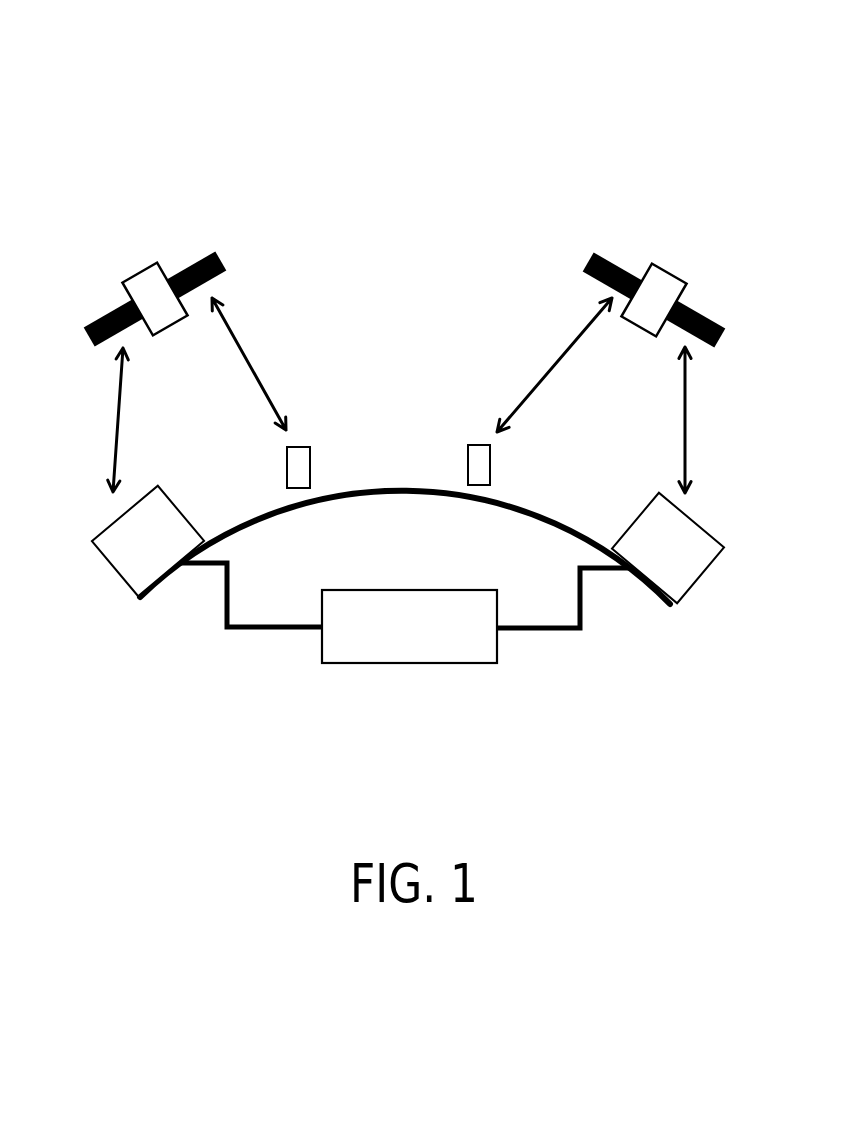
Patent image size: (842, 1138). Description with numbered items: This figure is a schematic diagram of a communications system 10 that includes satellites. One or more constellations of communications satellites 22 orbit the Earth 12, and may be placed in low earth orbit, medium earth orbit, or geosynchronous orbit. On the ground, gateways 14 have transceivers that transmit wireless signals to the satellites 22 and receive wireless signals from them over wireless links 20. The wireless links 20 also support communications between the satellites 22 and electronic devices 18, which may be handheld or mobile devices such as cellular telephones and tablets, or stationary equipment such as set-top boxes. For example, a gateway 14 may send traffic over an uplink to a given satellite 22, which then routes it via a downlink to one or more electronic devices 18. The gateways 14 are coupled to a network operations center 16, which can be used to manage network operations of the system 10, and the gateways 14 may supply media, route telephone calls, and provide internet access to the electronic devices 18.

The communications system 10 is at (352, 114).
The Earth 12 is at (248, 518).
The gateway 14 is at (112, 568).
The network operations center 16 is at (472, 663).
The electronic device 18 is at (298, 488).
The wireless link 20 is at (250, 377).
The communications satellite 22 is at (142, 270).